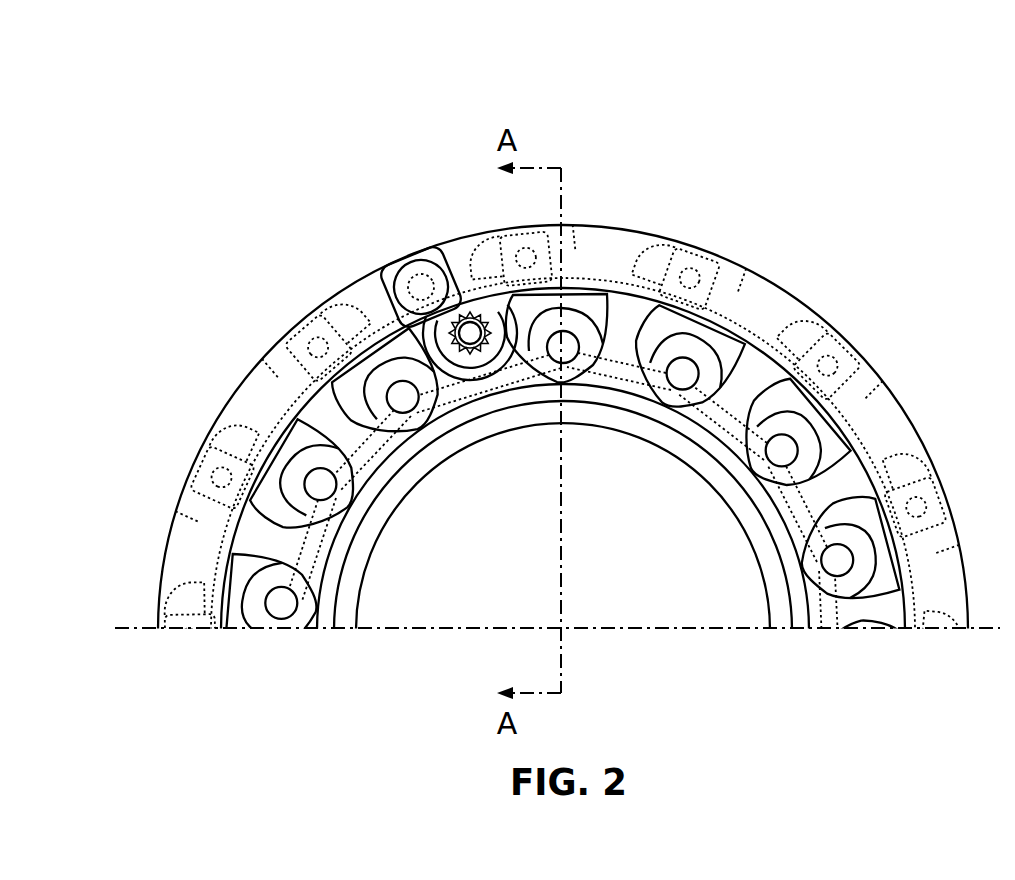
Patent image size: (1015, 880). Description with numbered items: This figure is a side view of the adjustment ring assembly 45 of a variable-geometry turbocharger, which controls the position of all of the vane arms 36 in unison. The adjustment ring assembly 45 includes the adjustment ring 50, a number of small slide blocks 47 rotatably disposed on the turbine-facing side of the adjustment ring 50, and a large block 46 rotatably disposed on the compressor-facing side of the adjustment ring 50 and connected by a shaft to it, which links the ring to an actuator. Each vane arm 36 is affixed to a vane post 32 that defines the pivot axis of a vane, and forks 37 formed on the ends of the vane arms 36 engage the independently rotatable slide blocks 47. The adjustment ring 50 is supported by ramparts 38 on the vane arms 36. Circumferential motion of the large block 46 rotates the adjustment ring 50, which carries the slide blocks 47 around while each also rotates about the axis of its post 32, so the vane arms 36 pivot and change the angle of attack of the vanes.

The post 32 is at (682, 376).
The vane arm 36 is at (575, 372).
The fork 37 is at (580, 262).
The rampart 38 is at (587, 307).
The adjustment ring assembly 45 is at (563, 440).
The large block 46 is at (368, 290).
The slide block 47 is at (176, 296).
The adjustment ring 50 is at (255, 377).